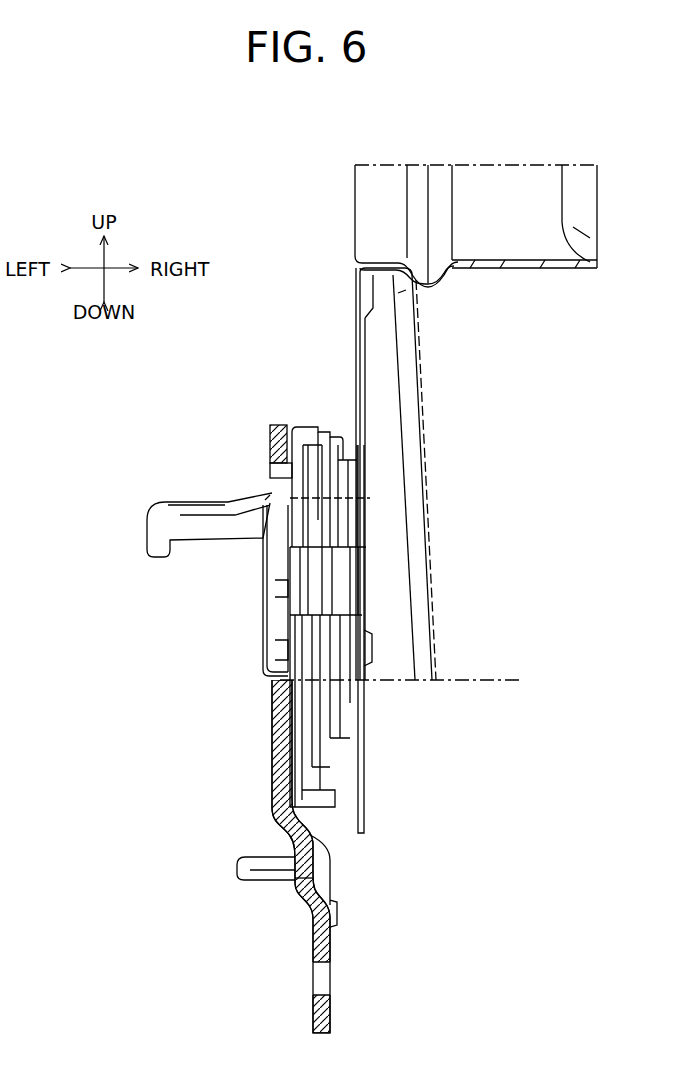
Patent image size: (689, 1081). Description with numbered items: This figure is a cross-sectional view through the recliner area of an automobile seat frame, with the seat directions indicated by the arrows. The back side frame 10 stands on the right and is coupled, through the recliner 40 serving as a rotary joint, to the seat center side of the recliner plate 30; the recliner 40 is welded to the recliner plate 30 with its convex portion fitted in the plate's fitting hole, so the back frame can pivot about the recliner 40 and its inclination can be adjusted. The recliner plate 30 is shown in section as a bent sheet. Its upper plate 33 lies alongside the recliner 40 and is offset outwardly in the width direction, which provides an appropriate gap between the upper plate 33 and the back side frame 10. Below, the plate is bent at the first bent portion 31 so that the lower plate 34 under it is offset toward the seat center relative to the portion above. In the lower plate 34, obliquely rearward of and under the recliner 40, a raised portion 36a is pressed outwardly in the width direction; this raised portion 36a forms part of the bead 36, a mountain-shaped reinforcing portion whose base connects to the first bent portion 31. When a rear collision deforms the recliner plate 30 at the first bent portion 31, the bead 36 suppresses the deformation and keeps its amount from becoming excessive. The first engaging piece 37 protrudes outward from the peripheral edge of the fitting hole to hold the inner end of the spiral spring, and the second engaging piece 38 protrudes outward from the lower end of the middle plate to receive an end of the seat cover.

The back side frame 10 is at (357, 337).
The recliner plate 30 is at (243, 729).
The first bent portion 31 is at (320, 832).
The upper plate 33 is at (272, 735).
The lower plate 34 is at (313, 947).
The bead 36 is at (290, 903).
The raised portion 36a is at (292, 882).
The first engaging piece 37 is at (142, 509).
The second engaging piece 38 is at (237, 862).
The recliner 40 is at (304, 416).